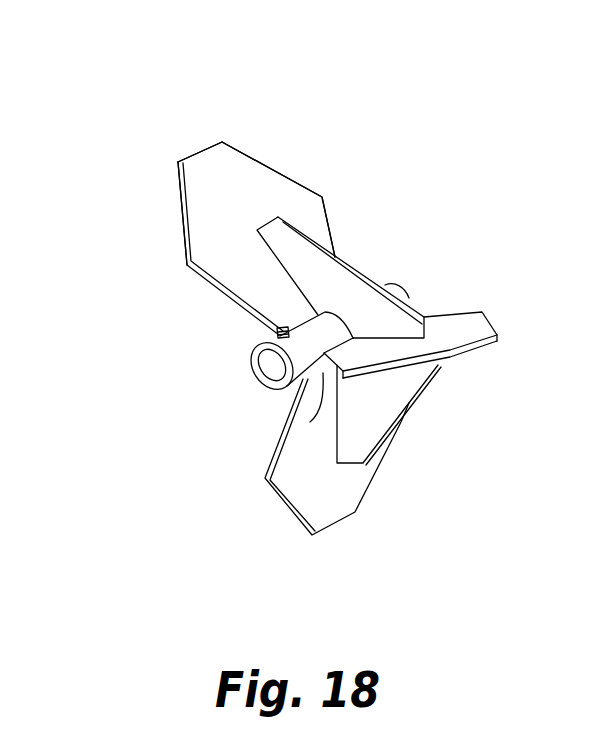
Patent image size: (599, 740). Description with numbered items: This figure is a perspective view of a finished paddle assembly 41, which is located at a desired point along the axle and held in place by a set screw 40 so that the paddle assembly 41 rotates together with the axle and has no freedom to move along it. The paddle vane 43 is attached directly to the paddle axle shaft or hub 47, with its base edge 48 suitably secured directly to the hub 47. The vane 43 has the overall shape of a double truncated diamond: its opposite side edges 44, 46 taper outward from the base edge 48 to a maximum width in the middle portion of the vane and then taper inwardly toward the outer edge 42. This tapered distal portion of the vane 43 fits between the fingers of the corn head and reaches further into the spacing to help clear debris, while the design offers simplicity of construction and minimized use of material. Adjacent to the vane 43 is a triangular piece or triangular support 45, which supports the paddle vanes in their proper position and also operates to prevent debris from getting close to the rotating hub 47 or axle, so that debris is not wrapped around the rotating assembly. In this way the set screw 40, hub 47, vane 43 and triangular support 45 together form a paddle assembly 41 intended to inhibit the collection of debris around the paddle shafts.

The set screw 40 is at (280, 333).
The paddle assembly 41 is at (392, 284).
The outer edge 42 is at (212, 143).
The paddle vane 43 is at (193, 156).
The side edge 44 is at (263, 163).
The triangular support 45 is at (402, 422).
The side edge 46 is at (181, 216).
The hub 47 is at (263, 387).
The base edge 48 is at (310, 422).